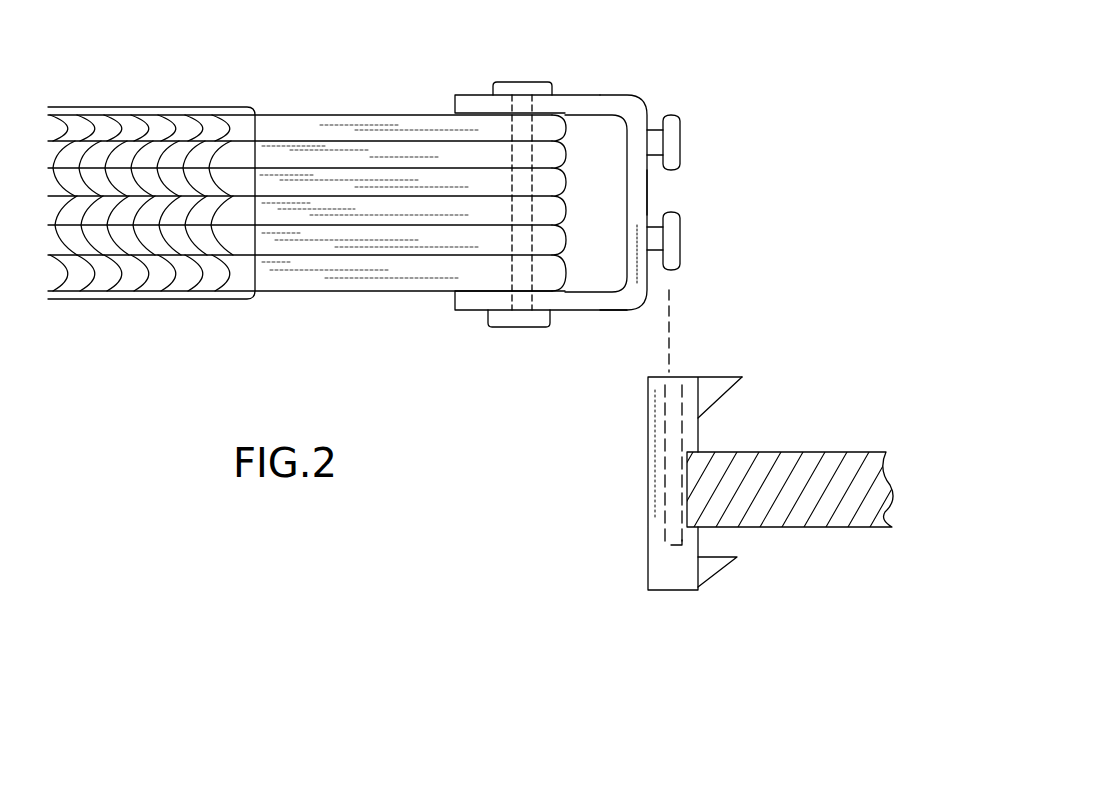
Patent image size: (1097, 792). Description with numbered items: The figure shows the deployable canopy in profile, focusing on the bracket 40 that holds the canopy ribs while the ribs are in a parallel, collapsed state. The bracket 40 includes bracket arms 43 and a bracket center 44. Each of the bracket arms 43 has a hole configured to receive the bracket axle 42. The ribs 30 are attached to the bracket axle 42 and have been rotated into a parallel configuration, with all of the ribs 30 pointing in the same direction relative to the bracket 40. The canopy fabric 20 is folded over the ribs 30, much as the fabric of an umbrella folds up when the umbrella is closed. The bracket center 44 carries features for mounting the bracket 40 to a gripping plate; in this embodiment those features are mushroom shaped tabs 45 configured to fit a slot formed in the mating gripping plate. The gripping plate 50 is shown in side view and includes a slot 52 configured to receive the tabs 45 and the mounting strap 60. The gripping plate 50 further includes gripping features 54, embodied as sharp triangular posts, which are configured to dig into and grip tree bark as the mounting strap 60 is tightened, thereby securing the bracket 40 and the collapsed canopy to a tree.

The canopy fabric 20 is at (145, 106).
The ribs 30 is at (570, 183).
The bracket 40 is at (623, 299).
The bracket axle 42 is at (517, 82).
The bracket arms 43 is at (566, 100).
The bracket center 44 is at (648, 195).
The mushroom shaped tabs 45 is at (682, 142).
The gripping plate 50 is at (650, 560).
The slot 52 is at (665, 475).
The gripping features 54 is at (742, 378).
The mounting strap 60 is at (818, 457).